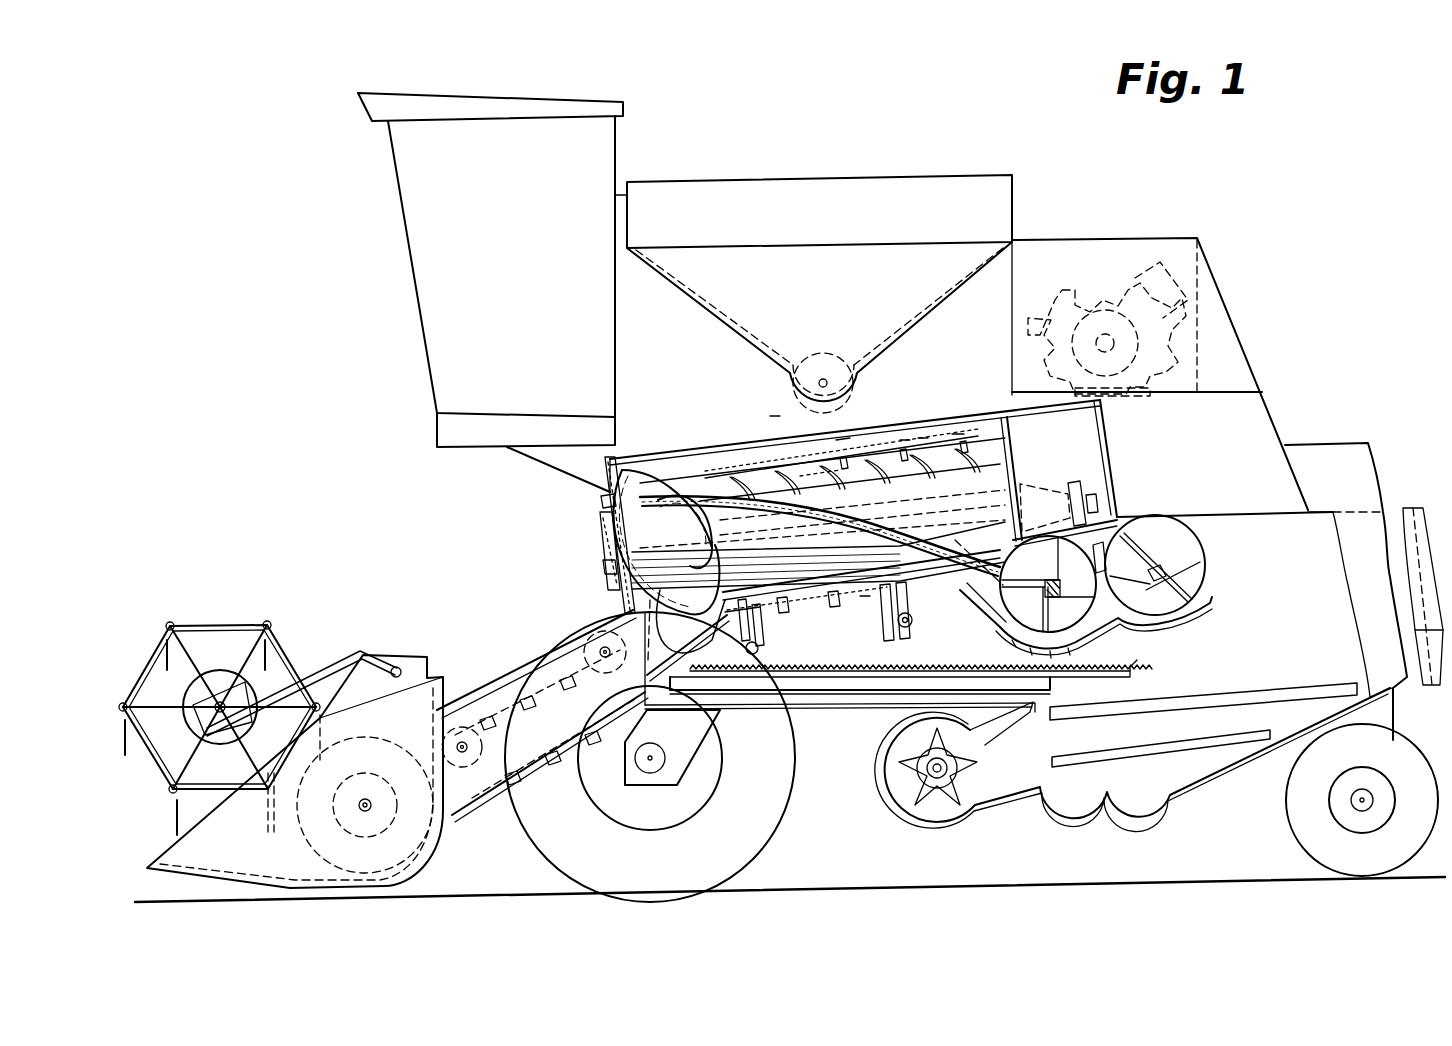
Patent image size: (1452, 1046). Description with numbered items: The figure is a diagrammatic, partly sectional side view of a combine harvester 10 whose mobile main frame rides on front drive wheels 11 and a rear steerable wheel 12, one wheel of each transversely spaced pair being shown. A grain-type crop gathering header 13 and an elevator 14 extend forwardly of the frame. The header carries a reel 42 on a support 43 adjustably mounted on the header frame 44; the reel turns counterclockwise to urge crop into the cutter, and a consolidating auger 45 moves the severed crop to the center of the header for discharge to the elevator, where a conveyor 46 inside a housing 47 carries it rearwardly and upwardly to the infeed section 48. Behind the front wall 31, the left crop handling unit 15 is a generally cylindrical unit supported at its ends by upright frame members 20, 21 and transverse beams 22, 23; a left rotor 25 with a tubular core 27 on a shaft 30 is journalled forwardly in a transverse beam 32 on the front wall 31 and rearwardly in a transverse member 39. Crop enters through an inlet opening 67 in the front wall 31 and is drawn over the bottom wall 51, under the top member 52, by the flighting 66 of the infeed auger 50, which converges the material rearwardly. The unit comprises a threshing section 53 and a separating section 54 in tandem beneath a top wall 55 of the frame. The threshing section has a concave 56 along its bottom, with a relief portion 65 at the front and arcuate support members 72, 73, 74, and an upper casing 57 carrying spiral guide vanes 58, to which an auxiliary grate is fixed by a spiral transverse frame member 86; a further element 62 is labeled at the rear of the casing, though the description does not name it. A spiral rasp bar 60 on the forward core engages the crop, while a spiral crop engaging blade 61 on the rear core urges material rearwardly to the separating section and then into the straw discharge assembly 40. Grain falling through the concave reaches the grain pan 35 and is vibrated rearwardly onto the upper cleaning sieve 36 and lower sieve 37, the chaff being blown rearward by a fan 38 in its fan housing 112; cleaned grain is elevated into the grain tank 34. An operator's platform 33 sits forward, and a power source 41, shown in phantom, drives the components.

The combine harvester 10 is at (1256, 215).
The front drive wheels 11 is at (770, 852).
The rear steerable wheel 12 is at (1288, 825).
The crop gathering header 13 is at (272, 553).
The elevator 14 is at (494, 562).
The crop handling unit 15 is at (812, 650).
The upright frame member 20 is at (770, 395).
The upright frame member 21 is at (1010, 432).
The transversely extending beam 22 is at (755, 630).
The transversely extending beam 23 is at (906, 618).
The left rotor 25 is at (950, 595).
The tubular core 27 is at (995, 504).
The shaft 30 is at (605, 568).
The front wall 31 is at (608, 474).
The transverse beam 32 is at (603, 548).
The operator's platform 33 is at (540, 383).
The grain tank 34 is at (872, 297).
The grain pan 35 is at (1132, 670).
The upper cleaning sieve 36 is at (1230, 697).
The lower sieve 37 is at (1158, 748).
The fan 38 is at (940, 800).
The transverse member 39 is at (1075, 478).
The straw discharge assembly 40 is at (1205, 540).
The power source 41 is at (1105, 335).
The reel 42 is at (211, 620).
The support 43 is at (322, 652).
The header frame 44 is at (425, 640).
The consolidating auger 45 is at (440, 857).
The conveyor 46 is at (542, 716).
The housing 47 is at (530, 765).
The infeed section 48 is at (680, 625).
The infeed auger 50 is at (646, 470).
The bottom wall 51 is at (745, 642).
The top member 52 is at (690, 462).
The threshing section 53 is at (775, 415).
The separating section 54 is at (922, 436).
The top wall 55 is at (905, 438).
The concave 56 is at (864, 605).
The upper casing 57 is at (800, 475).
The guide vanes 58 is at (812, 468).
The spiral rasp bar 60 is at (780, 518).
The crop engaging blade 61 is at (970, 554).
The rear grate 62 is at (958, 432).
The relief portion 65 is at (758, 612).
The flighting 66 is at (604, 500).
The inlet opening 67 is at (652, 658).
The support member 72 is at (782, 606).
The support member 73 is at (832, 614).
The support member 74 is at (885, 605).
The transverse frame member 86 is at (838, 440).
The fan housing 112 is at (895, 785).